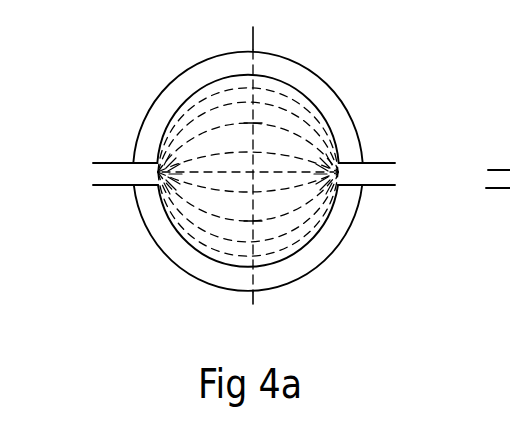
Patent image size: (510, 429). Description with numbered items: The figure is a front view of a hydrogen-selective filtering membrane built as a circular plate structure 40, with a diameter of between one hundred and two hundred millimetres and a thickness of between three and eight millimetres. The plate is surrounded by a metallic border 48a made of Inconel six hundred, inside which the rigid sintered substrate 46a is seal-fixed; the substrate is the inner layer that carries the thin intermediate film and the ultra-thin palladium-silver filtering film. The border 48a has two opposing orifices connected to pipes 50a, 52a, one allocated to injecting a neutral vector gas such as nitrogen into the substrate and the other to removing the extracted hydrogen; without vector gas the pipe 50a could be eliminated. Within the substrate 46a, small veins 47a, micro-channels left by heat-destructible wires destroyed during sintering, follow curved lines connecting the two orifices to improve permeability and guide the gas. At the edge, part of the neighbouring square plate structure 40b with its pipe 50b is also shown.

The plate structure 40 is at (110, 112).
The metallic border 48a is at (275, 64).
The small veins 47a is at (292, 247).
The rigid sintered substrate 46a is at (283, 100).
The pipe 50a is at (113, 173).
The pipe 52a is at (369, 175).
The rectangular plate structure 40b is at (486, 152).
The pipe 50b is at (500, 175).